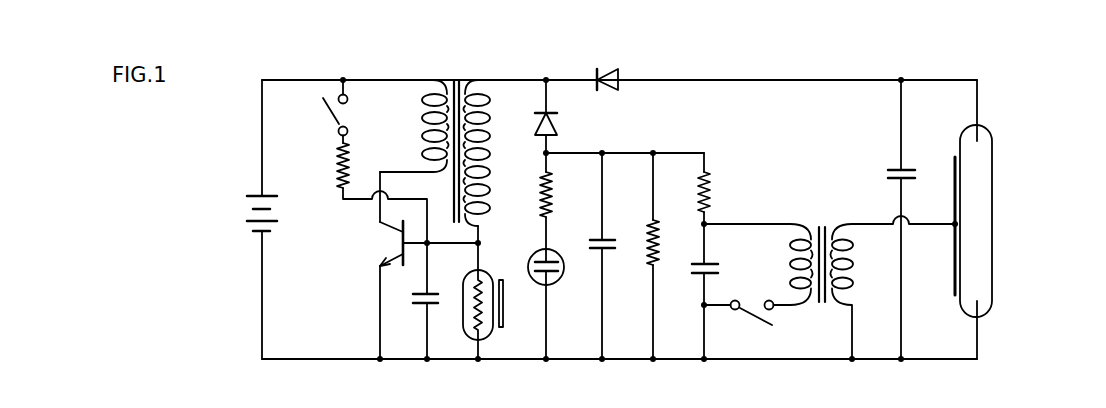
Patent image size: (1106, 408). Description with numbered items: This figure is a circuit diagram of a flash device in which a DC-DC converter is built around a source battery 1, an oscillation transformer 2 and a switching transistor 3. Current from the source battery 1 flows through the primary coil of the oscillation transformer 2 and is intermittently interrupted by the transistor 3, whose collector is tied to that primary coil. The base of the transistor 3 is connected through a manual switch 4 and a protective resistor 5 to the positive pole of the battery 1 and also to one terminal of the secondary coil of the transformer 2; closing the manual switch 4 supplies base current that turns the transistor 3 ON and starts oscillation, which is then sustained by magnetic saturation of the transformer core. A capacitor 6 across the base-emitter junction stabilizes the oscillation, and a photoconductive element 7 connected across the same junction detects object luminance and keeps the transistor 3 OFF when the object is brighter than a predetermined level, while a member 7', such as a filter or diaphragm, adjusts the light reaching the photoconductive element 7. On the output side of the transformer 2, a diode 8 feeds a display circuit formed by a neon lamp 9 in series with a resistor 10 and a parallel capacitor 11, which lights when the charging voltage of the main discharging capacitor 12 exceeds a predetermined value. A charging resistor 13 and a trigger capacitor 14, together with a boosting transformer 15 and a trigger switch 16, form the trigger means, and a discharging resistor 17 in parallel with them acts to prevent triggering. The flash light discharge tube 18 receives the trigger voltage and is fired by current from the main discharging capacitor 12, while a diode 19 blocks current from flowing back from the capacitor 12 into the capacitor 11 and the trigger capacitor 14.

The source battery 1 is at (250, 219).
The oscillation transformer 2 is at (458, 80).
The switching transistor 3 is at (390, 251).
The manual switch 4 is at (330, 113).
The protective resistor 5 is at (348, 160).
The capacitor 6 is at (418, 300).
The photoconductive element 7 is at (466, 332).
The member 7' is at (515, 337).
The diode 8 is at (562, 125).
The neon lamp 9 is at (560, 270).
The resistor 10 is at (540, 185).
The capacitor 11 is at (610, 237).
The main discharging capacitor 12 is at (905, 168).
The charging resistor 13 is at (712, 190).
The trigger capacitor 14 is at (700, 275).
The boosting transformer 15 is at (822, 224).
The trigger switch 16 is at (750, 320).
The discharging resistor 17 is at (645, 247).
The flash light discharge tube 18 is at (980, 212).
The diode 19 is at (612, 68).